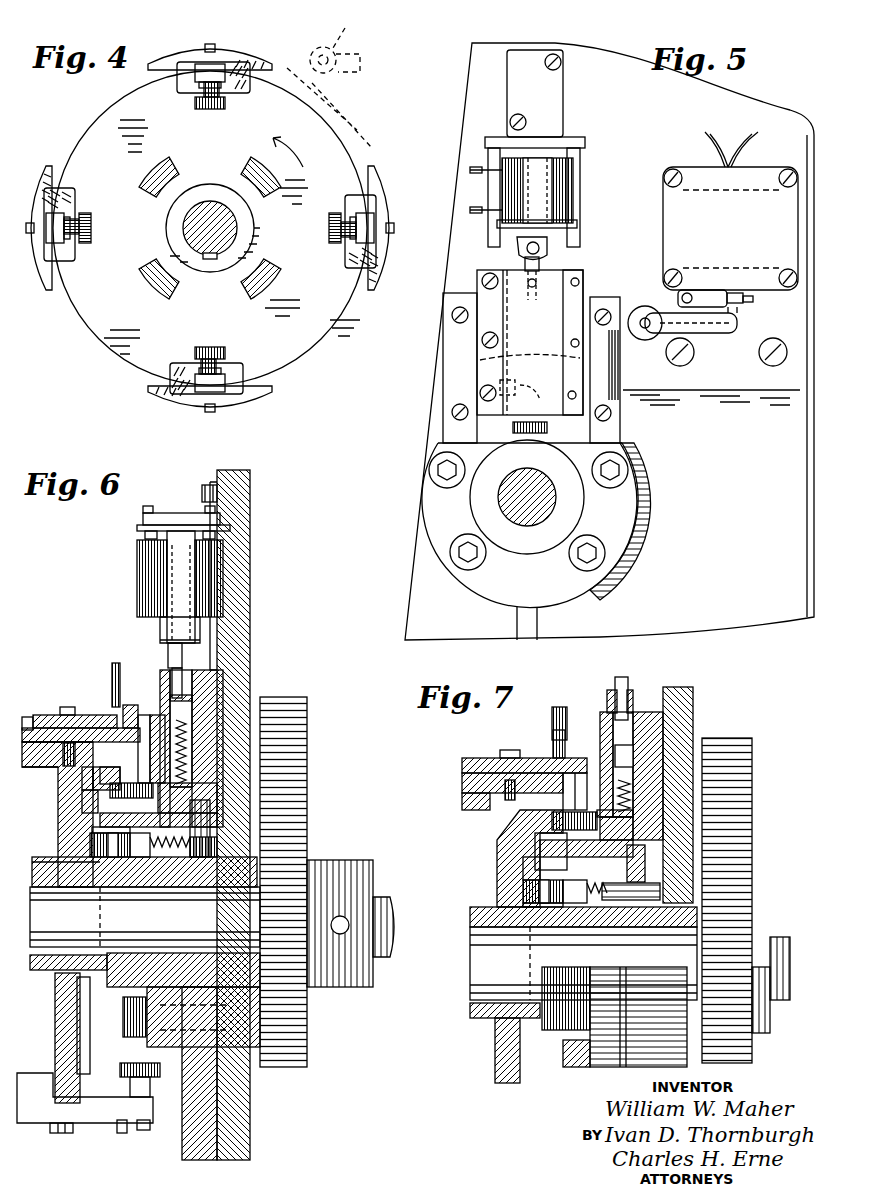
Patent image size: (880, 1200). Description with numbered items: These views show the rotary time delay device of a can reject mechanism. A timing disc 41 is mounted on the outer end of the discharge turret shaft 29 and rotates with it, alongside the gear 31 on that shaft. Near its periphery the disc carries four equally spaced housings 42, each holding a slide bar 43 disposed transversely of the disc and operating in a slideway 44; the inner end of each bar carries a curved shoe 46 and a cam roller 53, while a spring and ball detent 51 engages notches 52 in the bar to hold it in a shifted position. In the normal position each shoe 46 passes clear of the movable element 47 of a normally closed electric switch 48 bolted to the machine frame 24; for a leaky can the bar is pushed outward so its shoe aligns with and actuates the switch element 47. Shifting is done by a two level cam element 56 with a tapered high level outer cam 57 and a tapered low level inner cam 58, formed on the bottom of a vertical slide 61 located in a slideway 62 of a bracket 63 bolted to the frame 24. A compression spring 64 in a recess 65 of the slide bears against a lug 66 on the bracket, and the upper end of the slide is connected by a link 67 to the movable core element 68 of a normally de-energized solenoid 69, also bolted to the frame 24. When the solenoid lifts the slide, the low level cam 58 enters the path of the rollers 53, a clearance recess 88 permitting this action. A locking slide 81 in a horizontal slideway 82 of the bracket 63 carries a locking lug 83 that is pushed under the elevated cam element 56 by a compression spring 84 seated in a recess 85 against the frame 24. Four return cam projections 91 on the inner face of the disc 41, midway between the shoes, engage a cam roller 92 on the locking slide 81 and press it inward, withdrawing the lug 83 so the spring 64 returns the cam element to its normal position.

In FIG. 5, the machine frame 24 is at (609, 341).
In FIG. 6, the machine frame 24 is at (243, 532).
In FIG. 7, the machine frame 24 is at (682, 728).
In FIG. 4, the discharge turret shaft 29 is at (208, 228).
In FIG. 5, the discharge turret shaft 29 is at (507, 503).
In FIG. 6, the discharge turret shaft 29 is at (392, 897).
In FIG. 7, the discharge turret shaft 29 is at (778, 937).
In FIG. 6, the gear 31 is at (297, 763).
In FIG. 7, the gear 31 is at (738, 790).
In FIG. 4, the timing disc 41 is at (107, 332).
In FIG. 6, the timing disc 41 is at (62, 1015).
In FIG. 7, the timing disc 41 is at (497, 1057).
In FIG. 4, the housing 42 is at (235, 82).
In FIG. 6, the housing 42 is at (26, 752).
In FIG. 4, the slide bar 43 is at (198, 72).
In FIG. 6, the slide bar 43 is at (47, 717).
In FIG. 7, the slide bar 43 is at (482, 762).
In FIG. 4, the slideway 44 is at (197, 85).
In FIG. 6, the slideway 44 is at (28, 717).
In FIG. 4, the curved shoe 46 is at (233, 50).
In FIG. 7, the curved shoe 46 is at (552, 753).
In FIG. 4, the movable switch element 47 is at (337, 42).
In FIG. 5, the movable switch element 47 is at (642, 307).
In FIG. 6, the movable switch element 47 is at (115, 667).
In FIG. 7, the movable switch element 47 is at (557, 710).
In FIG. 5, the electric switch 48 is at (730, 249).
In FIG. 6, the spring and ball detent 51 is at (53, 757).
In FIG. 7, the spring and ball detent 51 is at (463, 797).
In FIG. 6, the notches 52 is at (85, 727).
In FIG. 7, the notches 52 is at (510, 783).
In FIG. 4, the cam roller 53 is at (212, 110).
In FIG. 6, the cam roller 53 is at (133, 762).
In FIG. 7, the cam roller 53 is at (563, 820).
In FIG. 5, the cam element 56 is at (533, 397).
In FIG. 6, the cam element 56 is at (95, 805).
In FIG. 7, the cam element 56 is at (540, 853).
In FIG. 5, the high level cam 57 is at (517, 363).
In FIG. 6, the high level cam 57 is at (103, 778).
In FIG. 7, the high level cam 57 is at (553, 803).
In FIG. 5, the low level cam 58 is at (590, 363).
In FIG. 6, the low level cam 58 is at (100, 790).
In FIG. 5, the vertical slide 61 is at (530, 342).
In FIG. 6, the vertical slide 61 is at (182, 705).
In FIG. 7, the vertical slide 61 is at (627, 707).
In FIG. 5, the slideway 62 is at (571, 302).
In FIG. 6, the slideway 62 is at (200, 682).
In FIG. 5, the bracket 63 is at (450, 340).
In FIG. 6, the bracket 63 is at (210, 705).
In FIG. 7, the bracket 63 is at (653, 722).
In FIG. 6, the compression spring 64 is at (192, 762).
In FIG. 7, the compression spring 64 is at (633, 810).
In FIG. 6, the recess 65 is at (203, 746).
In FIG. 7, the recess 65 is at (646, 791).
In FIG. 6, the lug 66 is at (170, 717).
In FIG. 7, the lug 66 is at (623, 770).
In FIG. 5, the link 67 is at (523, 262).
In FIG. 6, the link 67 is at (180, 667).
In FIG. 7, the link 67 is at (622, 683).
In FIG. 5, the movable core element 68 is at (542, 233).
In FIG. 6, the movable core element 68 is at (193, 650).
In FIG. 5, the electric solenoid 69 is at (550, 177).
In FIG. 6, the electric solenoid 69 is at (147, 567).
In FIG. 5, the locking slide 81 is at (530, 437).
In FIG. 6, the locking slide 81 is at (128, 862).
In FIG. 7, the locking slide 81 is at (560, 905).
In FIG. 6, the horizontal slideway 82 is at (140, 860).
In FIG. 7, the horizontal slideway 82 is at (575, 903).
In FIG. 6, the locking lug 83 is at (180, 818).
In FIG. 7, the locking lug 83 is at (650, 862).
In FIG. 6, the compression spring 84 is at (180, 857).
In FIG. 7, the compression spring 84 is at (600, 903).
In FIG. 6, the recess 85 is at (160, 857).
In FIG. 7, the recess 85 is at (630, 903).
In FIG. 6, the clearance recess 88 is at (97, 845).
In FIG. 7, the clearance recess 88 is at (547, 860).
In FIG. 4, the return cam projection 91 is at (237, 173).
In FIG. 6, the return cam projection 91 is at (90, 847).
In FIG. 7, the return cam projection 91 is at (530, 888).
In FIG. 6, the cam roller 92 is at (105, 845).
In FIG. 7, the cam roller 92 is at (535, 905).